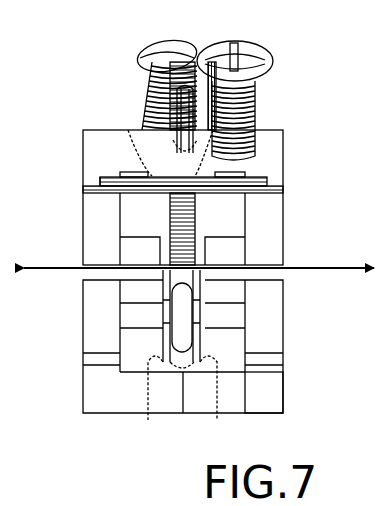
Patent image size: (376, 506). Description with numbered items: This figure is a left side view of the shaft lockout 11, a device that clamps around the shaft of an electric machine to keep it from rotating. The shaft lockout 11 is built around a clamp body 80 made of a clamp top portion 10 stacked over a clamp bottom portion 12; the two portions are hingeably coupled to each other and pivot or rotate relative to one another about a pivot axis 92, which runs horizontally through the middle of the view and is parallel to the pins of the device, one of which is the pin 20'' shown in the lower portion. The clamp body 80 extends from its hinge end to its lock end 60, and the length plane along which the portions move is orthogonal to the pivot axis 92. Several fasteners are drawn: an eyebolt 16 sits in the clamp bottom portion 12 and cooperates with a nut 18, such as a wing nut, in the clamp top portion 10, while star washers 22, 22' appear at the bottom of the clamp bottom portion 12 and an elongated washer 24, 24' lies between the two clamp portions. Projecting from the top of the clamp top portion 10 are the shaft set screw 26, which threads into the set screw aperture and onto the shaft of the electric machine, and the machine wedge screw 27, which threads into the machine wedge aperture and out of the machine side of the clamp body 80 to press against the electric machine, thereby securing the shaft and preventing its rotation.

The clamp top portion 10 is at (100, 152).
The shaft lockout 11 is at (283, 144).
The clamp bottom portion 12 is at (100, 383).
The eyebolt 16 is at (180, 312).
The nut 18 is at (134, 150).
The pin 20'' is at (234, 316).
The star washer 22 is at (217, 402).
The star washer 22' is at (134, 403).
The elongated washer 24 is at (209, 176).
The washer plate 24' is at (73, 199).
The shaft set screw 26 is at (252, 65).
The machine wedge screw 27 is at (152, 55).
The lock end 60 is at (110, 335).
The clamp body 80 is at (273, 395).
The pivot axis 92 is at (353, 267).